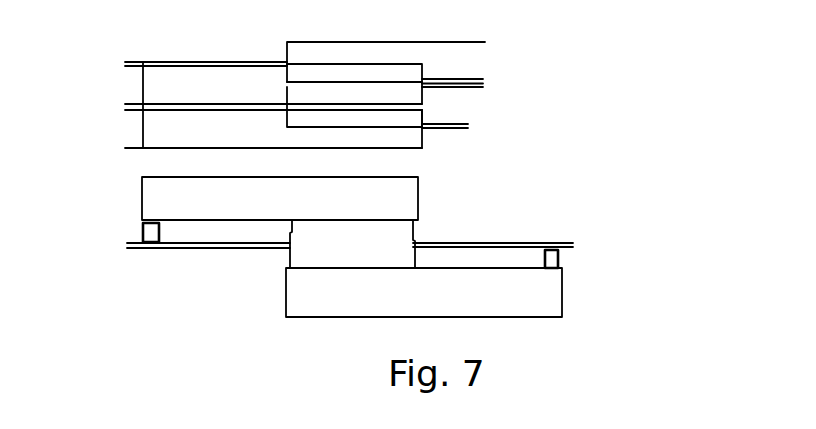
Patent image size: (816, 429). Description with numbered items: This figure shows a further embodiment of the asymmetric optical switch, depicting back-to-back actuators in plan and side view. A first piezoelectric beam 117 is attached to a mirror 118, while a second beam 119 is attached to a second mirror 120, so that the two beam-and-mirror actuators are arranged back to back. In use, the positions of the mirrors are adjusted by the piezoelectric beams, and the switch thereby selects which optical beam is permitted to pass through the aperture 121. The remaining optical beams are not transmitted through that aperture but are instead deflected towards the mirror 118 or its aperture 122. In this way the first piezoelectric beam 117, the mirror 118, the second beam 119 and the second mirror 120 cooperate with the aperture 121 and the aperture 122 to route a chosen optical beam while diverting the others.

The first piezoelectric beam 117 is at (388, 194).
The mirror 118 is at (422, 118).
The second beam 119 is at (328, 308).
The second mirror 120 is at (287, 117).
The aperture 121 is at (287, 102).
The aperture 122 is at (422, 122).